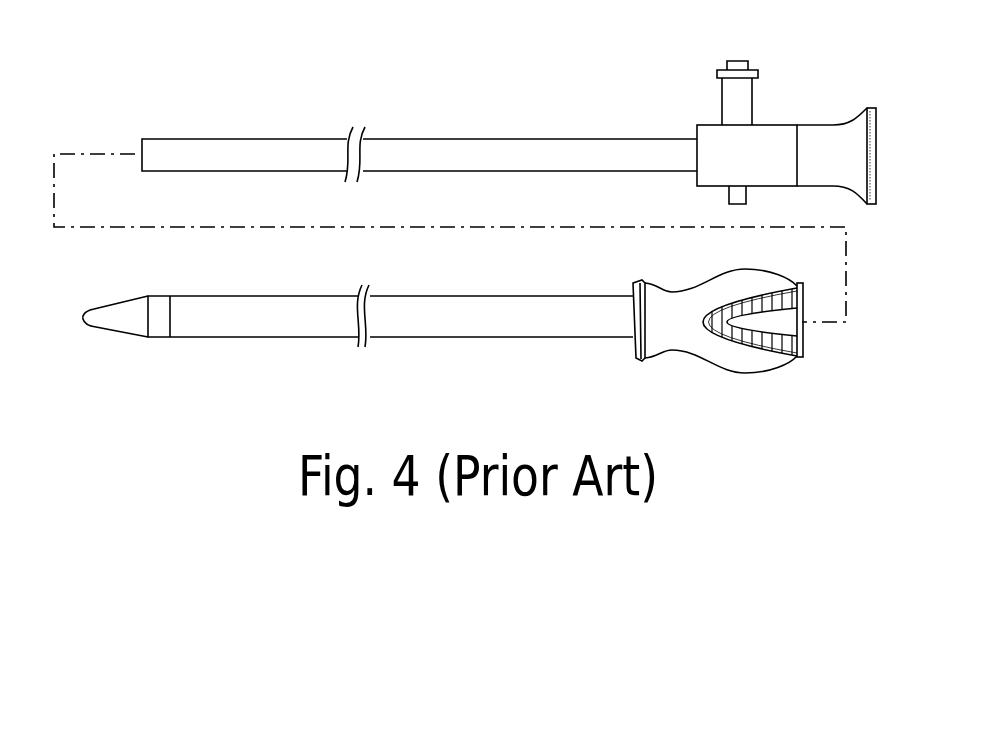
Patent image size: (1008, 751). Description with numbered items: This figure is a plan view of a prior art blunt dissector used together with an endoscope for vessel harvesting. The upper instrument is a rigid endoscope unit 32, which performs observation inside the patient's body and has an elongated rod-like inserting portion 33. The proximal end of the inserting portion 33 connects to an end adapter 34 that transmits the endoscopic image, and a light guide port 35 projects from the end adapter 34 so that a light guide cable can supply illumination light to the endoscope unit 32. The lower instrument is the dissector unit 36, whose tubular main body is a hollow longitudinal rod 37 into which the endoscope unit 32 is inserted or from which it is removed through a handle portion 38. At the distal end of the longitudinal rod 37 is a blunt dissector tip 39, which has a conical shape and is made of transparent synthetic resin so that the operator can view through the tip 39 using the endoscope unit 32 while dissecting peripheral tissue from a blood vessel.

The endoscope unit 32 is at (453, 79).
The inserting portion 33 is at (259, 139).
The end adapter 34 is at (812, 125).
The light guide port 35 is at (728, 110).
The dissector unit 36 is at (548, 283).
The longitudinal rod 37 is at (237, 296).
The handle portion 38 is at (742, 272).
The blunt dissector tip 39 is at (122, 333).